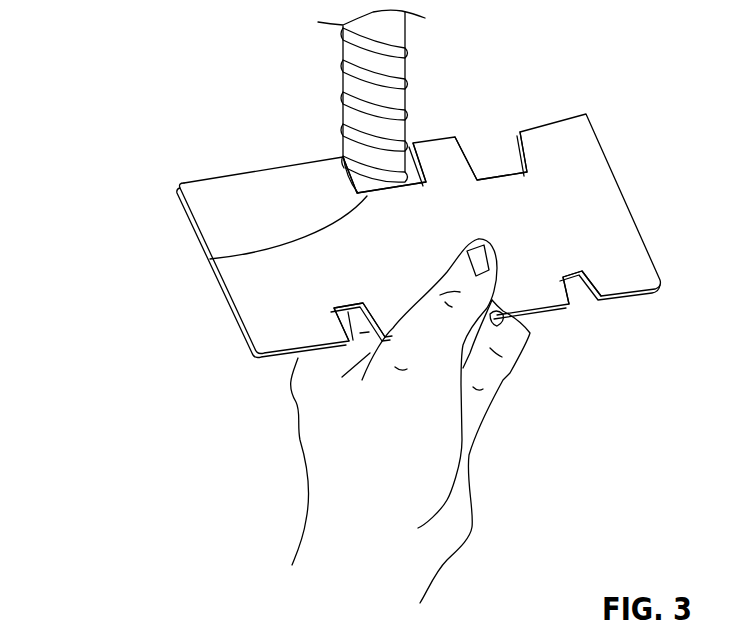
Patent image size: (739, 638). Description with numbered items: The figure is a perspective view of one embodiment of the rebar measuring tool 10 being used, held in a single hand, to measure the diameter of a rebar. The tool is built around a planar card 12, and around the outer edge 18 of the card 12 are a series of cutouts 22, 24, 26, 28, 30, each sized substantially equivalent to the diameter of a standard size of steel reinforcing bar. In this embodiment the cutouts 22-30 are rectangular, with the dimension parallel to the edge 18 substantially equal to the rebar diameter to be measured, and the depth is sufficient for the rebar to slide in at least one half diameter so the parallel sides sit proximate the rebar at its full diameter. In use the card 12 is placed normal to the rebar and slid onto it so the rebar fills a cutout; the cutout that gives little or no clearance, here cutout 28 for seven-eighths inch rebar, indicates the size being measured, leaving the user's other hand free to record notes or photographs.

The rebar measuring tool 10 is at (148, 74).
The planar card 12 is at (237, 176).
The outer edge 18 is at (301, 162).
The cutout 22 is at (375, 320).
The cutout 24 is at (497, 313).
The cutout 26 is at (580, 290).
The cutout 28 is at (210, 259).
The cutout 30 is at (506, 172).